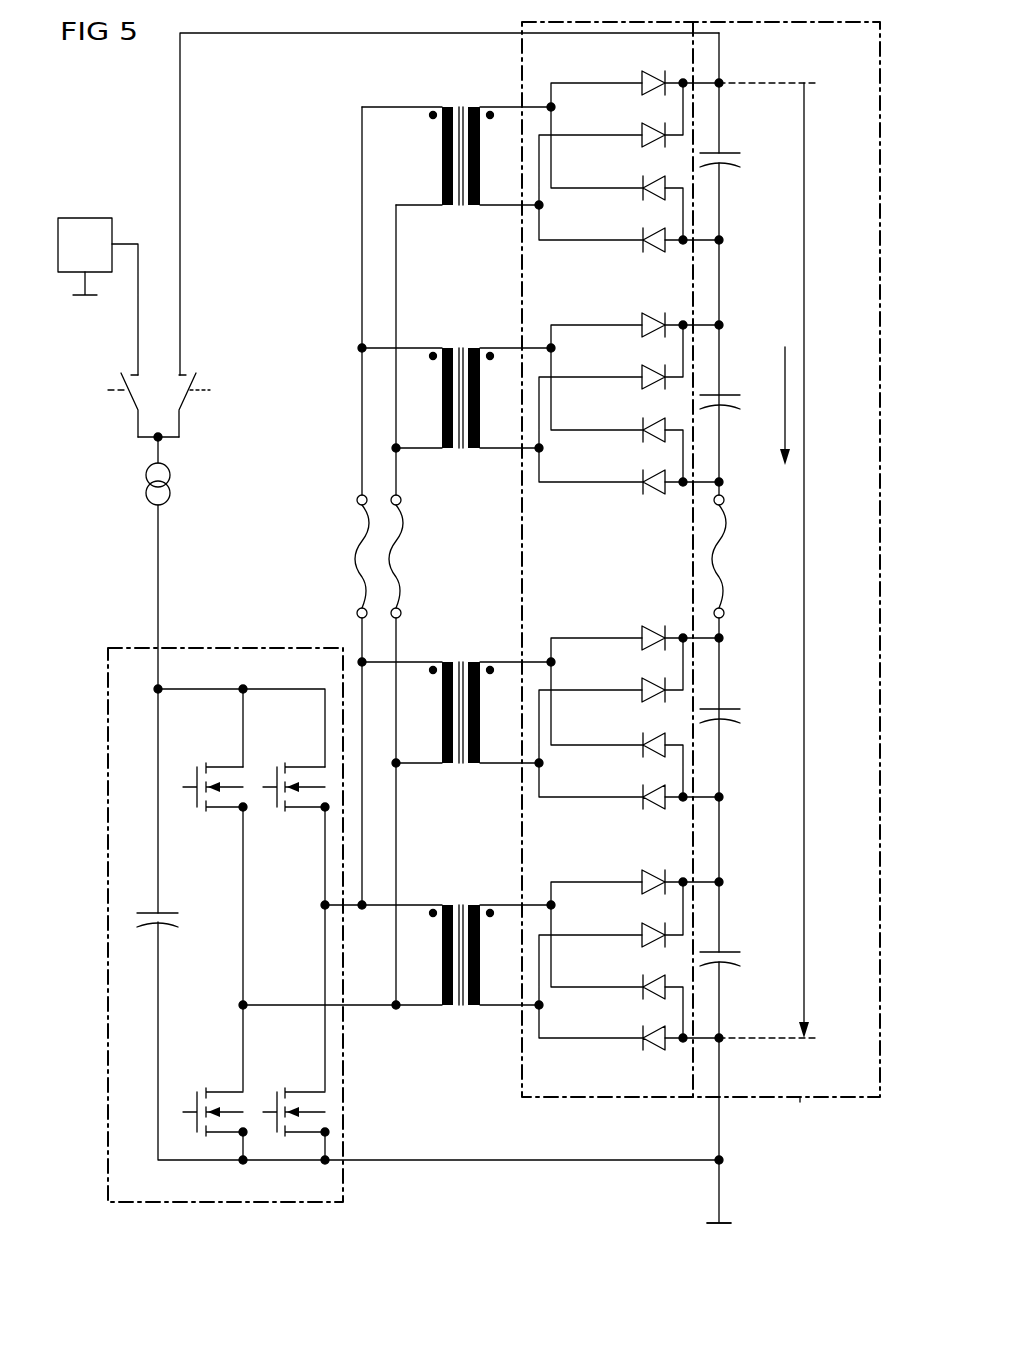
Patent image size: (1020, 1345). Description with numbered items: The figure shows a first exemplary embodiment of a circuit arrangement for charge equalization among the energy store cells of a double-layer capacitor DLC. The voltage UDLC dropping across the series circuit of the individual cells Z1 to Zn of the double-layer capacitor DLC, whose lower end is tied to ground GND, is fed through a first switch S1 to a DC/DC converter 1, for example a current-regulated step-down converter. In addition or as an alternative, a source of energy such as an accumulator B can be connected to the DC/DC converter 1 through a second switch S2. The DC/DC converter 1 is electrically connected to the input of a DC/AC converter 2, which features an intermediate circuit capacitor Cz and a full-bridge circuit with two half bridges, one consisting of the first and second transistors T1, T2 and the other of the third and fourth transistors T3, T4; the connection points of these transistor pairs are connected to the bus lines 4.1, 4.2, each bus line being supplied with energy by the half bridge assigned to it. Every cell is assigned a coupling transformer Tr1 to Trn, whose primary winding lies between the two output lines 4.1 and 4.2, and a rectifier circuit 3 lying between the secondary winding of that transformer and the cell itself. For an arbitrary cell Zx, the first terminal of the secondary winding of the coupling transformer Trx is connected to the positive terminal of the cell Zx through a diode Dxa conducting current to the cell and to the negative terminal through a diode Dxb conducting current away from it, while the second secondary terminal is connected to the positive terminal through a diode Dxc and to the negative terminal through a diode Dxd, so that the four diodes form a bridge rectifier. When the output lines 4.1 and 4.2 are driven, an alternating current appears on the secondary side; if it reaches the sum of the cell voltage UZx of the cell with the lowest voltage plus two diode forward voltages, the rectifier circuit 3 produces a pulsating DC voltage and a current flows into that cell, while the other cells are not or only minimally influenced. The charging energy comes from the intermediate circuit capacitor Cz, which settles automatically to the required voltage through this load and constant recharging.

The DC/DC converter 1 is at (171, 478).
The DC/AC converter 2 is at (228, 648).
The rectifier circuit 3 is at (520, 1074).
The bus line 4.1 is at (357, 487).
The bus line 4.2 is at (399, 487).
The accumulator B is at (98, 296).
The first switch S1 is at (186, 398).
The second switch S2 is at (132, 398).
The intermediate circuit capacitor Cz is at (165, 912).
The first transistor T1 is at (280, 765).
The second transistor T2 is at (280, 1090).
The third transistor T3 is at (200, 765).
The fourth transistor T4 is at (200, 1090).
The coupling transformer Tr1 is at (460, 105).
The coupling transformer Trx is at (460, 344).
The coupling transformer Trn is at (456, 1021).
The diode Dxa is at (640, 319).
The diode Dxb is at (640, 424).
The diode Dxc is at (640, 371).
The diode Dxd is at (640, 476).
The cell Z1 is at (724, 152).
The cell Zx is at (726, 394).
The cell Zn is at (726, 951).
The cell voltage UZx is at (780, 423).
The voltage UDLC is at (791, 560).
The double-layer capacitor DLC is at (801, 1098).
The ground GND is at (719, 1241).